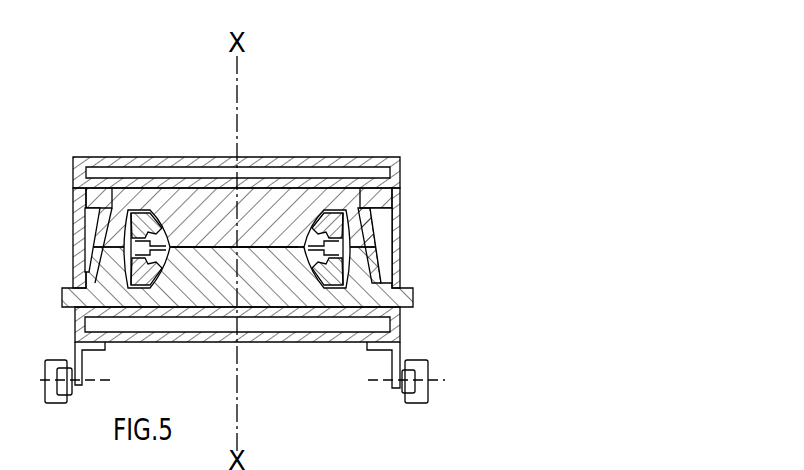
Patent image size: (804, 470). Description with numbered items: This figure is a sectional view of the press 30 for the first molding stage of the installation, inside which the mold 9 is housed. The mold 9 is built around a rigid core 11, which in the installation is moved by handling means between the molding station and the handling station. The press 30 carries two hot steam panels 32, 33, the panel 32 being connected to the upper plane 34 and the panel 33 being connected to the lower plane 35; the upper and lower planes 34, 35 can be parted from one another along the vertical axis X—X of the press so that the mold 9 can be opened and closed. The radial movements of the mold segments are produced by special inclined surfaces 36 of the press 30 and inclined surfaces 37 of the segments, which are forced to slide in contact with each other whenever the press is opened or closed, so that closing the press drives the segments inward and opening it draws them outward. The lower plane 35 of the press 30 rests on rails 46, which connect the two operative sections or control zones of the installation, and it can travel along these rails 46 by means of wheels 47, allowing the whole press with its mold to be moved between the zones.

The press 30 is at (242, 138).
The hot steam panel 32 is at (133, 172).
The upper plane 34 is at (172, 190).
The lower plane 35 is at (178, 302).
The hot steam panel 33 is at (134, 322).
The mold 9 is at (347, 215).
The rigid core 11 is at (352, 278).
The inclined surfaces of the press 36 is at (358, 224).
The inclined surfaces of the segments 37 is at (366, 253).
The rails 46 is at (421, 395).
The wheels 47 is at (404, 395).